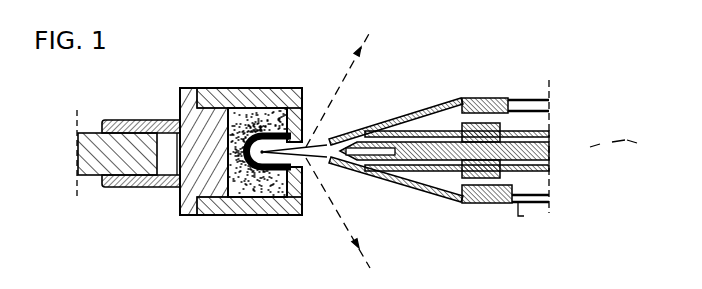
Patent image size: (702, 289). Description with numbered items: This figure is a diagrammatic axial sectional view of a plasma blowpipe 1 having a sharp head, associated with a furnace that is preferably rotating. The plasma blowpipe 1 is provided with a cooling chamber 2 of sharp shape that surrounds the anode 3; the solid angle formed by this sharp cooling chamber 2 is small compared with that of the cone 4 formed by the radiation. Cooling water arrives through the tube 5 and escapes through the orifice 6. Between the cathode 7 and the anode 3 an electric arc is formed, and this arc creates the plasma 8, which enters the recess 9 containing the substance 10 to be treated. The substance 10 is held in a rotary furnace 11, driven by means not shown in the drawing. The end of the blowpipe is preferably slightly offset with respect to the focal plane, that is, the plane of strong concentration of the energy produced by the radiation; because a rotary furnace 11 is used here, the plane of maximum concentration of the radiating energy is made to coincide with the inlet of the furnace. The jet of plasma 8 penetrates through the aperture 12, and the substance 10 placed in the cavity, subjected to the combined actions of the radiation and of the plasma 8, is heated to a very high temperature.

The plasma blowpipe 1 is at (526, 218).
The cooling chamber 2 is at (440, 124).
The anode 3 is at (352, 133).
The cone 4 is at (335, 90).
The tube 5 is at (549, 118).
The orifice 6 is at (543, 177).
The cathode 7 is at (380, 170).
The plasma 8 is at (338, 213).
The recess 9 is at (258, 215).
The substance to be treated 10 is at (237, 106).
The rotary furnace 11 is at (213, 216).
The aperture 12 is at (307, 162).